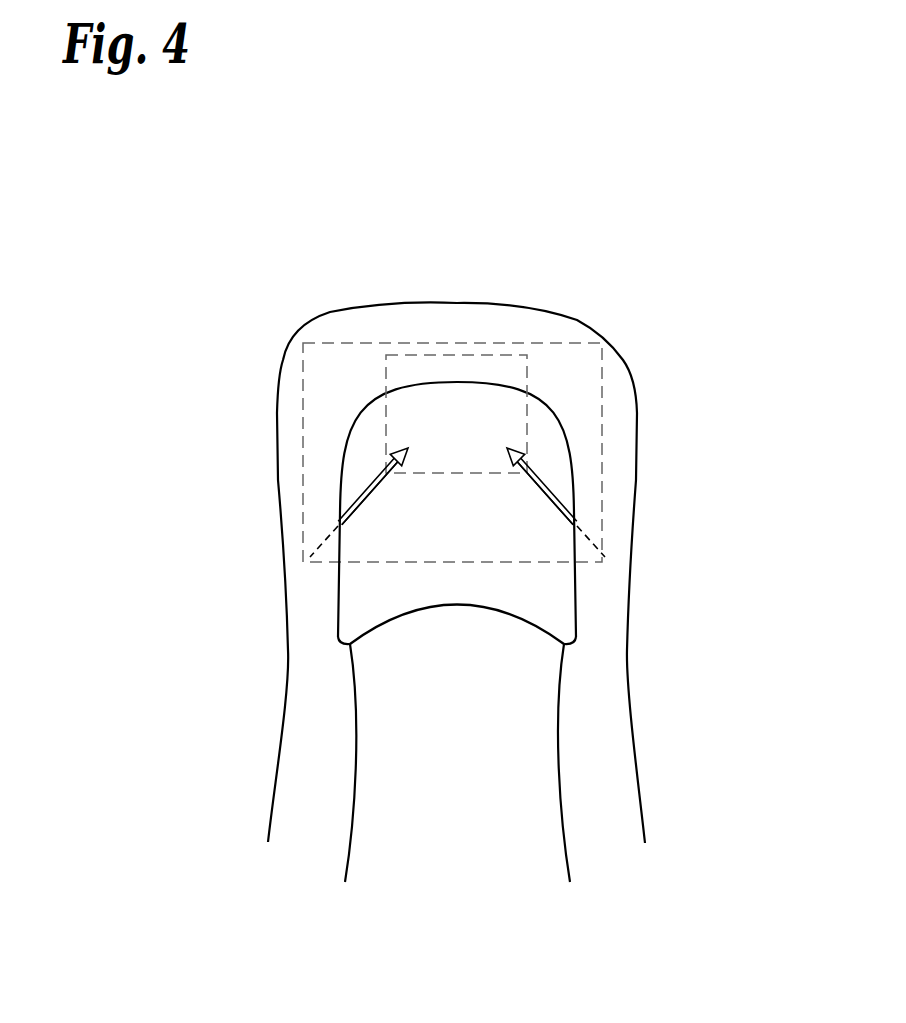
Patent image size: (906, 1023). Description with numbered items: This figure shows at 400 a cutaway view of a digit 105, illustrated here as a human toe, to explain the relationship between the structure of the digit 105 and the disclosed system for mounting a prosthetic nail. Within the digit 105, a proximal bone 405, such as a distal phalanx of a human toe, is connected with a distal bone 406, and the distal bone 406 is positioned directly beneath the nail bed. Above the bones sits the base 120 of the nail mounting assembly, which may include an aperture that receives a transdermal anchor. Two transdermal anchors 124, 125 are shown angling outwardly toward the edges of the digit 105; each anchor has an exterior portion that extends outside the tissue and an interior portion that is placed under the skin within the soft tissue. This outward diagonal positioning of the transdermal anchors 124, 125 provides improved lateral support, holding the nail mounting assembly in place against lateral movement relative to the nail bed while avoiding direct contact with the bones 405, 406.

The digit 105 is at (288, 652).
The base 120 is at (407, 355).
The transdermal anchor 124 is at (544, 517).
The transdermal anchor 125 is at (363, 518).
The relationship between digit structure and nail mounting system 400 is at (522, 277).
The proximal bone 405 is at (393, 827).
The distal bone 406 is at (548, 600).